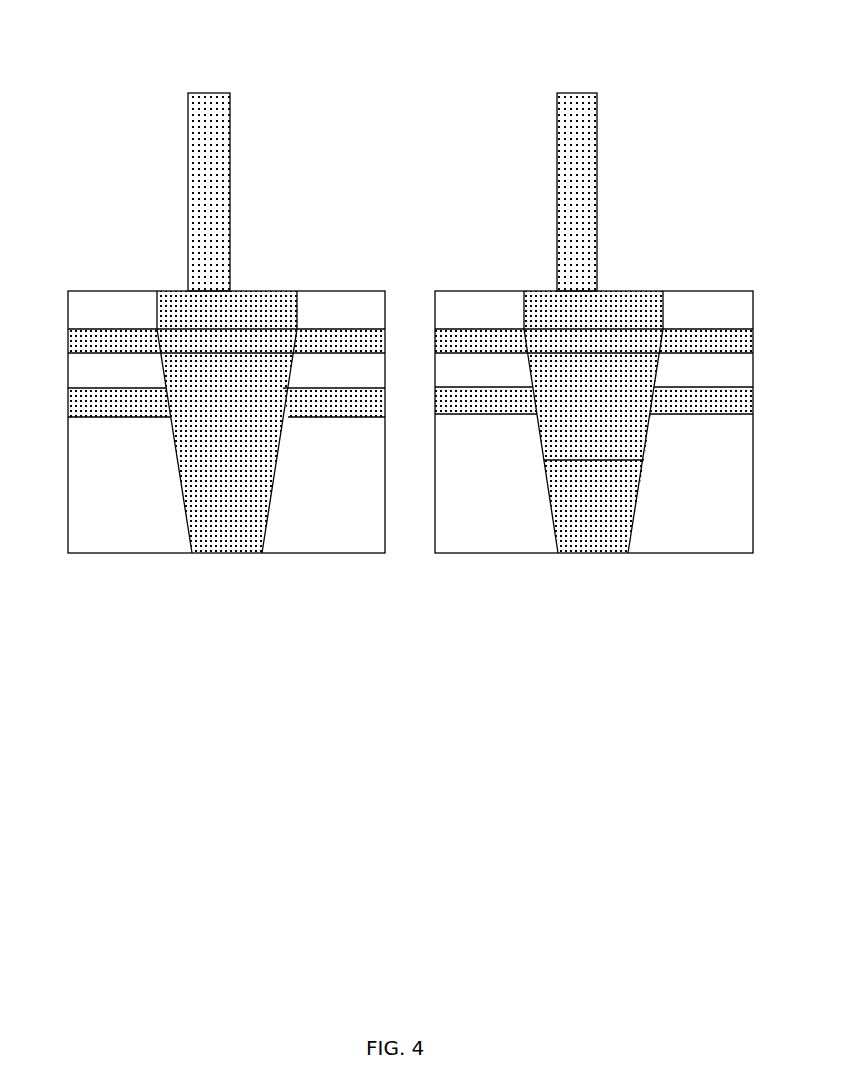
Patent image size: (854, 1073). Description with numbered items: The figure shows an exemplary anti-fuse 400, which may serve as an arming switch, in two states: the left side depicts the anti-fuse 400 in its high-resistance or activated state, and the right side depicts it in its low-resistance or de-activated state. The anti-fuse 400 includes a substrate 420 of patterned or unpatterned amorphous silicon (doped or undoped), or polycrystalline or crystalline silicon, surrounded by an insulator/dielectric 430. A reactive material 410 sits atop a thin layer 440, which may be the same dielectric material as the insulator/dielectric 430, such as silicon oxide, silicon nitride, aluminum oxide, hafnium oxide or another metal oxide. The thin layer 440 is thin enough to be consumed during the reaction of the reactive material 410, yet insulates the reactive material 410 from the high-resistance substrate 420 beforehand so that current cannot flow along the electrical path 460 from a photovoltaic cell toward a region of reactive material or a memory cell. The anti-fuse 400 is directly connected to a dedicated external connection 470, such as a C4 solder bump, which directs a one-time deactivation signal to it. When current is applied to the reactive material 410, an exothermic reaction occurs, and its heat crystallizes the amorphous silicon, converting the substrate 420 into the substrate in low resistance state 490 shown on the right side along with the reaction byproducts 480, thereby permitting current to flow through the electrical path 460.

The anti-fuse 400 is at (207, 656).
The reactive material 410 is at (178, 310).
The substrate 420 is at (208, 420).
The insulator/dielectric 430 is at (102, 467).
The thin layer 440 is at (335, 343).
The electrical path 460 is at (96, 396).
The dedicated external connection 470 is at (230, 93).
The resistive memory material (low resistance state) 480 is at (553, 322).
The substrate in low resistance state 490 is at (580, 410).